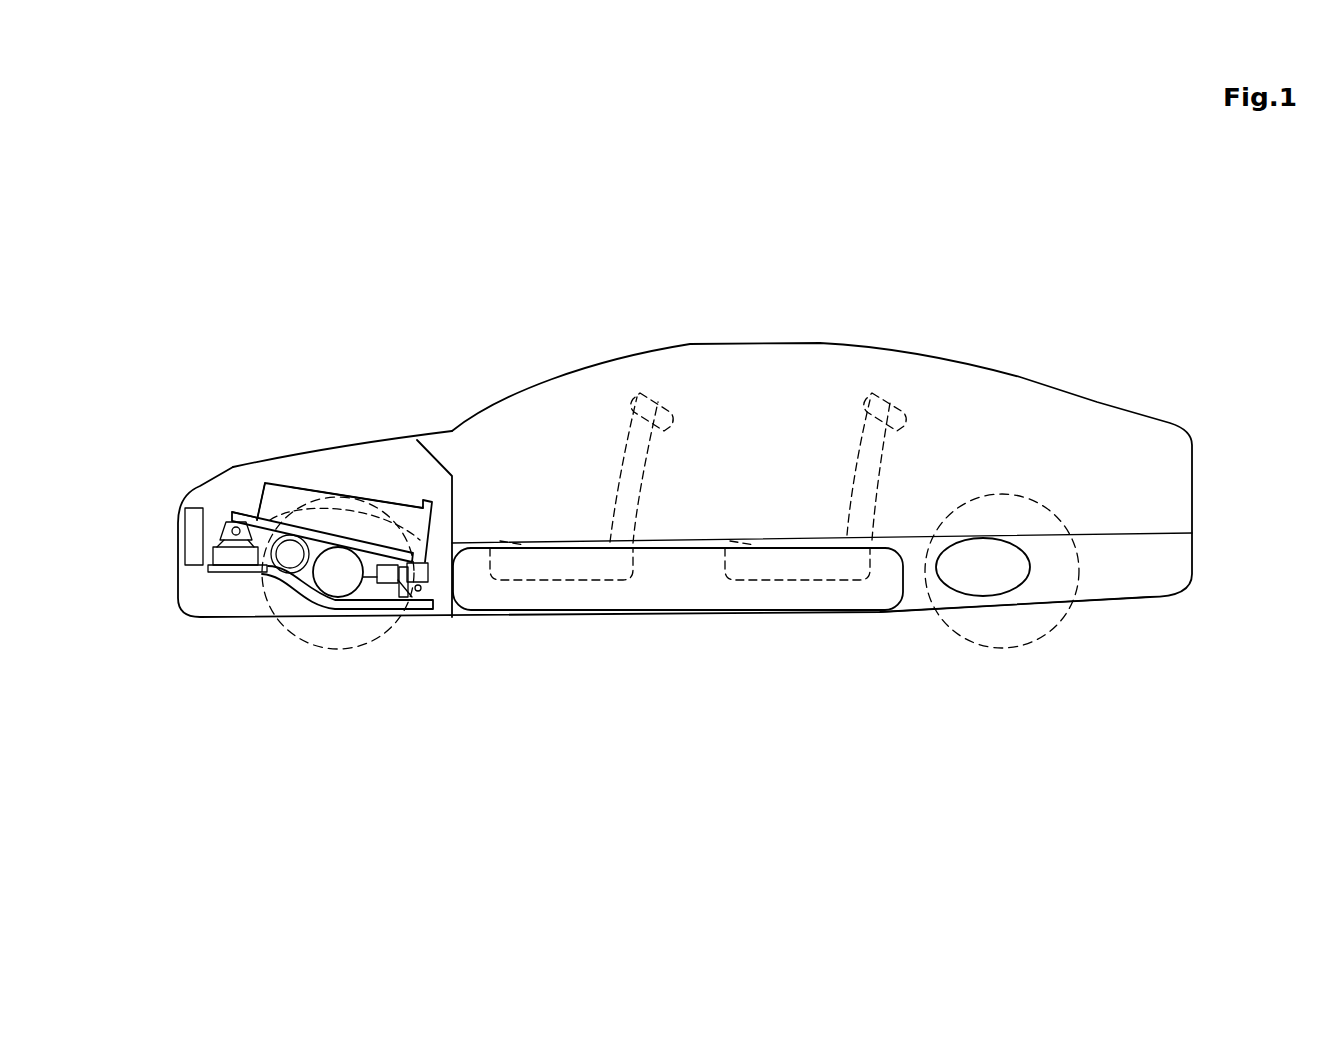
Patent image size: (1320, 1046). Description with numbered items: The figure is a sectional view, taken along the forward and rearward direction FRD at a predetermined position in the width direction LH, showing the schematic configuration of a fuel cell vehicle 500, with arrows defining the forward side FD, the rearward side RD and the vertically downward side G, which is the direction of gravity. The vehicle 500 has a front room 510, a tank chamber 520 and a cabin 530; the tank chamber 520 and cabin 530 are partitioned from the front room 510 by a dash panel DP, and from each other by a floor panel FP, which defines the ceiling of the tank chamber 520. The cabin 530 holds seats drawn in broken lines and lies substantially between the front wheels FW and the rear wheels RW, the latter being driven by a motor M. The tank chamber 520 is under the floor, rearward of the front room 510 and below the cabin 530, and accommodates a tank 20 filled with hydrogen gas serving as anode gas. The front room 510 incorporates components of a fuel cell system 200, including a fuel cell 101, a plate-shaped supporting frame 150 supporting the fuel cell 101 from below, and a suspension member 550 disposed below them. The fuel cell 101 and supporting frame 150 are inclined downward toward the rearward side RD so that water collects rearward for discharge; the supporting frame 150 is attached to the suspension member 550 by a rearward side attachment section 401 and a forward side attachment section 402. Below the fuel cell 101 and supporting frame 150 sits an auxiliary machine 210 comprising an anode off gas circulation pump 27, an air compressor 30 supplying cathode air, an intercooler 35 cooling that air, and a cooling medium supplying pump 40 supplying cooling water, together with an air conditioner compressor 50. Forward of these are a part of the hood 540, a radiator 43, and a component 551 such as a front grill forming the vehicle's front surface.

The fuel cell vehicle 500 is at (883, 343).
The front room 510 is at (377, 475).
The tank chamber 520 is at (918, 604).
The cabin 530 is at (750, 387).
The hood 540 is at (300, 456).
The suspension member 550 is at (208, 569).
The component forming a front surface 551 is at (180, 545).
The tank 20 is at (668, 597).
The anode off gas circulation pump 27 is at (413, 590).
The air compressor 30 is at (342, 575).
The intercooler 35 is at (392, 583).
The cooling medium supplying pump 40 is at (283, 602).
The radiator 43 is at (190, 512).
The air conditioner compressor 50 is at (271, 557).
The fuel cell 101 is at (308, 488).
The supporting frame 150 is at (257, 524).
The fuel cell system 200 is at (347, 477).
The auxiliary machine 210 is at (447, 730).
The rearward side attachment section 401 is at (421, 588).
The forward side attachment section 402 is at (229, 530).
The dash panel DP is at (445, 457).
The floor panel FP is at (683, 543).
The front wheels FW is at (318, 661).
The rear wheels RW is at (1037, 640).
The motor M is at (1030, 578).
The forward and rearward direction FRD is at (905, 763).
The forward side FD is at (1247, 763).
The rearward side RD is at (1279, 758).
The width direction LH is at (1192, 760).
The vertically downward side G is at (1197, 762).